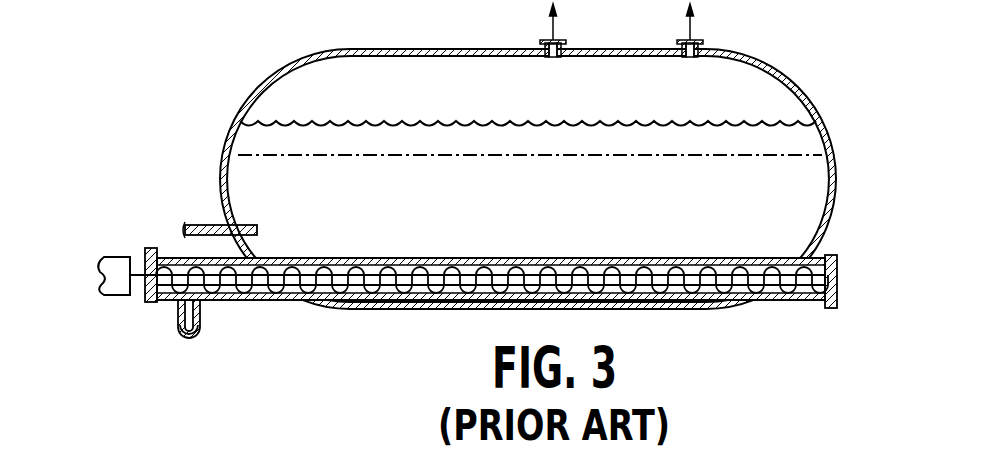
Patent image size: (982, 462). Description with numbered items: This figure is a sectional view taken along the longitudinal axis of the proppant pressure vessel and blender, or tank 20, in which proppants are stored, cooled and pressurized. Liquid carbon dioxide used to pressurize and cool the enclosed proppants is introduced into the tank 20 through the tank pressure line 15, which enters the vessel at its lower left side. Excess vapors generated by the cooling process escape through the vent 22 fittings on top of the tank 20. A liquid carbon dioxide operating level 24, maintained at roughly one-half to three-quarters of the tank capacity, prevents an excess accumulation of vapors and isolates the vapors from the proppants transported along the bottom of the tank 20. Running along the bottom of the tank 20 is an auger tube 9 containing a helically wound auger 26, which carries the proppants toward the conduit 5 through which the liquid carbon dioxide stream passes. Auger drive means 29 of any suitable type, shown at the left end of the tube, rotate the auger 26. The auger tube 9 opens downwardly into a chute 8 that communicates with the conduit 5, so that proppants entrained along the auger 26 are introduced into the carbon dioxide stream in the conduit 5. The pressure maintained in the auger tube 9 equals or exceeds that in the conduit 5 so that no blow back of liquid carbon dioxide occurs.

The conduit 5 is at (188, 326).
The chute 8 is at (203, 307).
The auger tube 9 is at (260, 296).
The tank pressure line 15 is at (213, 224).
The proppant pressure vessel 20 is at (798, 92).
The vent 22 is at (702, 47).
The liquid CO2 operating level 24 is at (680, 157).
The helically wound auger 26 is at (565, 258).
The auger drive means 29 is at (113, 257).